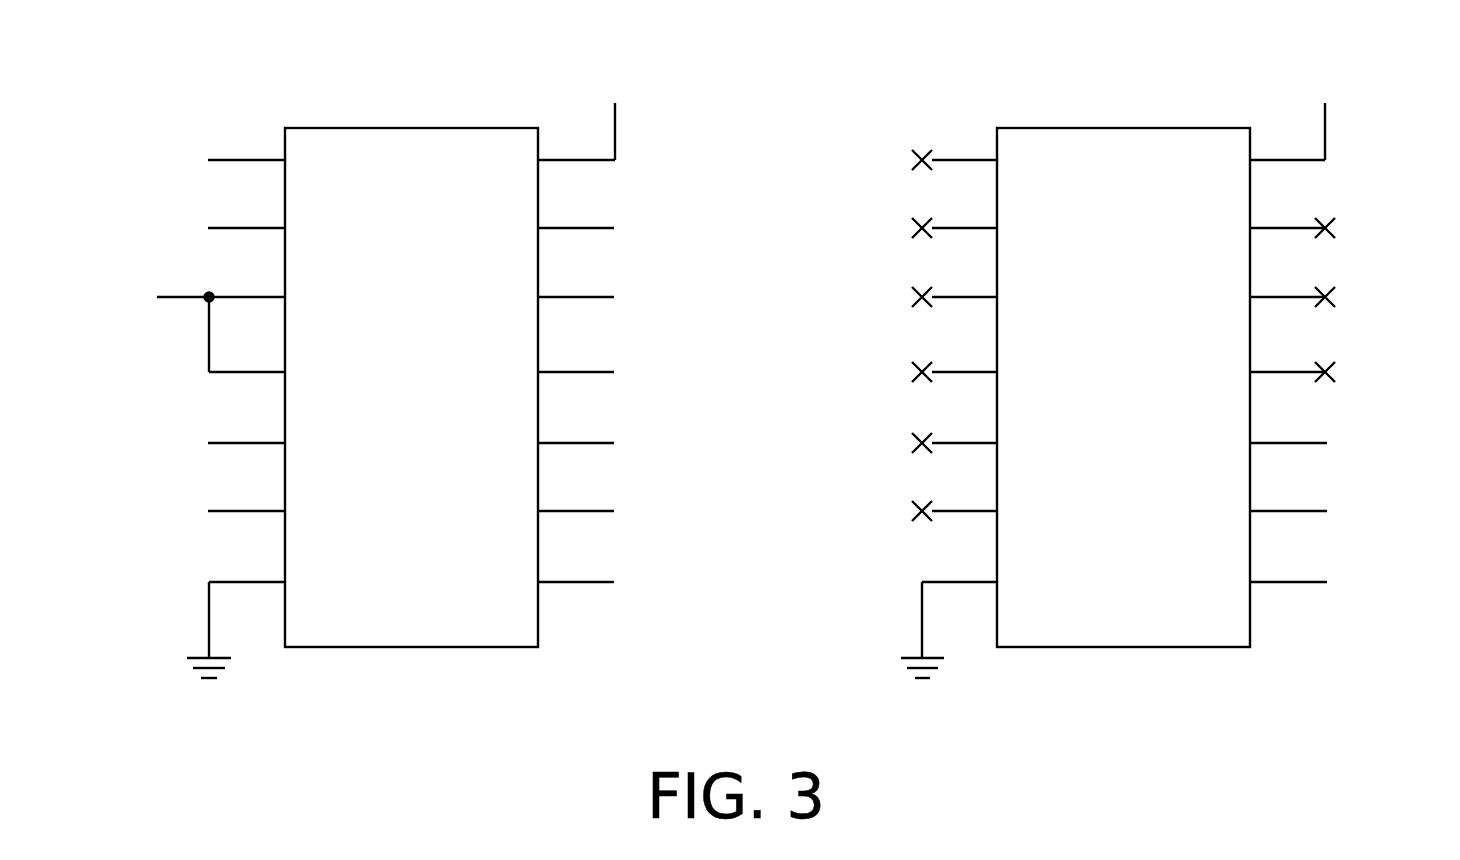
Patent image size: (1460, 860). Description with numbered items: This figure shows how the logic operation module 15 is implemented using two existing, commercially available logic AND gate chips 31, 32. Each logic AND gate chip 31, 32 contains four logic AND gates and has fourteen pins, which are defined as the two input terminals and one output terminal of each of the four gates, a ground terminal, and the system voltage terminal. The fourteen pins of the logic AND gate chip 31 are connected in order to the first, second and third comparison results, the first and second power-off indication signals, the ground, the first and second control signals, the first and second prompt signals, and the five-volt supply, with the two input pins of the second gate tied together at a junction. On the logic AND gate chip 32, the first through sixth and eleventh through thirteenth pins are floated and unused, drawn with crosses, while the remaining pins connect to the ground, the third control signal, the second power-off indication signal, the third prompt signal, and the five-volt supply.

The logic operation module 15 is at (1447, 722).
The logic AND gate chip 31 is at (412, 128).
The logic AND gate chip 32 is at (1123, 128).